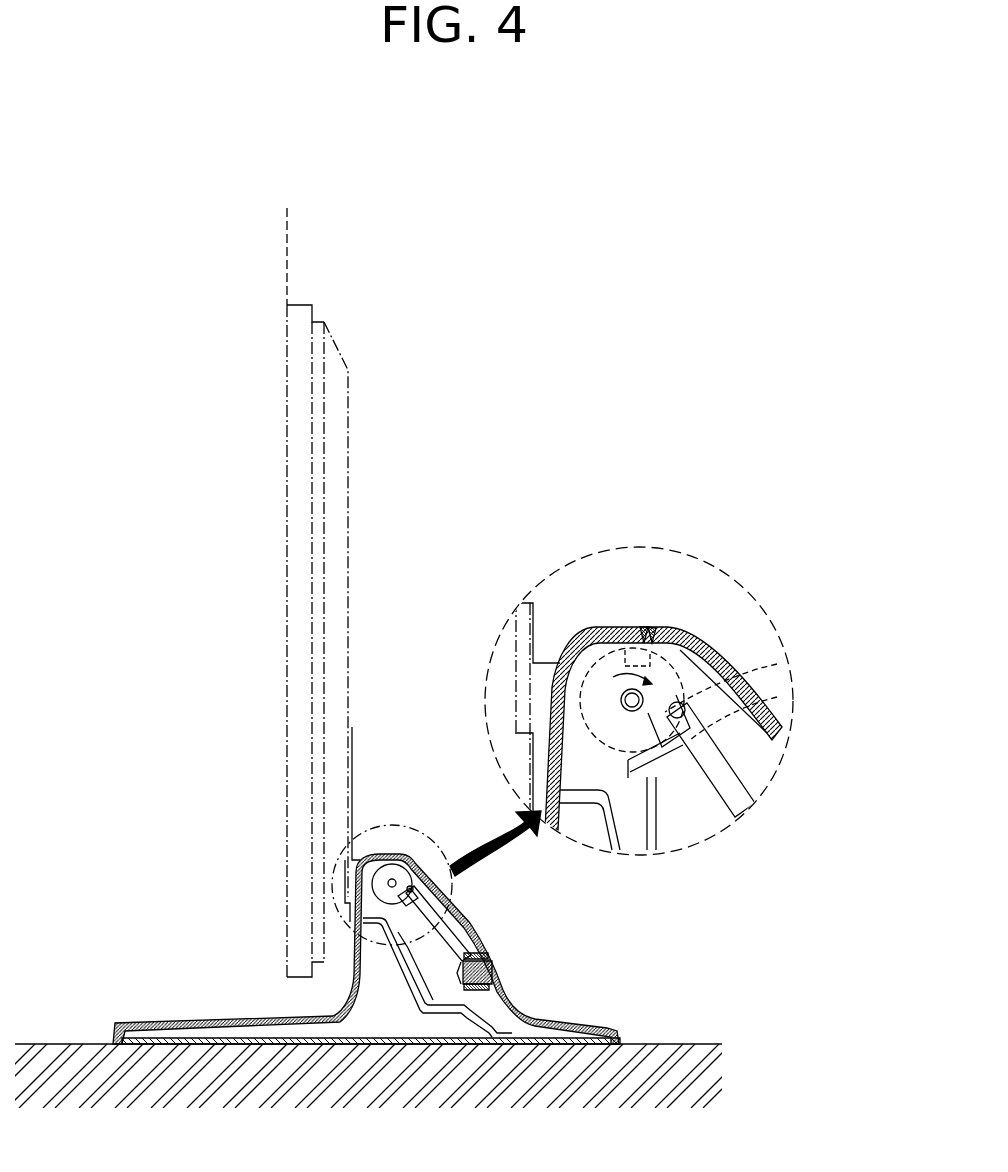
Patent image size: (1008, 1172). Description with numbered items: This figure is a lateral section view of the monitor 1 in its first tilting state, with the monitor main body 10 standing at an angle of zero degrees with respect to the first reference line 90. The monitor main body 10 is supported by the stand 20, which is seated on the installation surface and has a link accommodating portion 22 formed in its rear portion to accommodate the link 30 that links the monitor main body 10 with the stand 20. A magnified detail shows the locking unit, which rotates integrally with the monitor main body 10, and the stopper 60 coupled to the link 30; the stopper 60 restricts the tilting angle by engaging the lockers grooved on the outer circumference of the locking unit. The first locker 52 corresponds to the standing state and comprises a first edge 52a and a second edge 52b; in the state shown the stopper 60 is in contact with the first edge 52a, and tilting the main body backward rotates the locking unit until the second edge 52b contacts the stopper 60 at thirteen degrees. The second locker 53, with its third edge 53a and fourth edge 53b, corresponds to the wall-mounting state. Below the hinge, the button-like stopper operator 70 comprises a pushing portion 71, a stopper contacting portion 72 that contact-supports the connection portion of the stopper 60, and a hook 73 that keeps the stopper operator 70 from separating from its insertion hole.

The monitor 1 is at (236, 351).
The monitor main body 10 is at (355, 385).
The stand 20 is at (341, 1023).
The link accommodating portion 22 is at (352, 915).
The link 30 is at (448, 1003).
The first locker 52 is at (862, 658).
The first edge 52a is at (777, 697).
The second edge 52b is at (777, 664).
The second locker 53 is at (760, 517).
The third edge 53a is at (650, 622).
The fourth edge 53b is at (645, 622).
The stopper 60 is at (730, 785).
The stopper operator 70 is at (558, 930).
The pushing portion 71 is at (493, 982).
The stopper contacting portion 72 is at (470, 955).
The hook 73 is at (493, 967).
The first reference line 90 is at (285, 579).